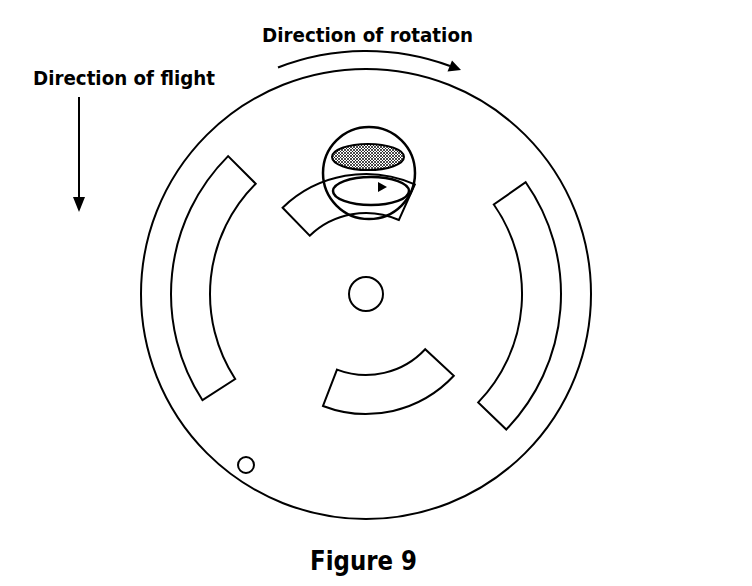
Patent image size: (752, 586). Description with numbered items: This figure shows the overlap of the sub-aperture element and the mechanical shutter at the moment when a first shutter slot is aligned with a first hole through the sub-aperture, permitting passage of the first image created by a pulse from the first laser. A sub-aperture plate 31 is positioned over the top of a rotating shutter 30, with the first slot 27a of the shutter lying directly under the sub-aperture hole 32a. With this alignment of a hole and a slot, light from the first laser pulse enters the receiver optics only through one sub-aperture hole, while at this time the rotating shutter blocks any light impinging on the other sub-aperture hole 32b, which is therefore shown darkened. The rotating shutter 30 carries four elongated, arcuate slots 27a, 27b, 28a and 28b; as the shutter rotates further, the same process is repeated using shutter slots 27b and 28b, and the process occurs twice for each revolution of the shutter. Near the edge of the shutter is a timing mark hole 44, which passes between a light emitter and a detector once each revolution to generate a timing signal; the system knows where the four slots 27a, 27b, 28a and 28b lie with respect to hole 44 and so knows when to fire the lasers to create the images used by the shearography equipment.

The rotating shutter 30 is at (563, 228).
The shutter slot 28a is at (187, 253).
The shutter slot 28b is at (550, 319).
The first slot 27a is at (315, 203).
The shutter slot 27b is at (418, 388).
The sub-aperture plate 31 is at (412, 200).
The sub-aperture hole 32a is at (415, 177).
The sub-aperture hole 32b is at (407, 148).
The timing mark hole 44 is at (223, 443).